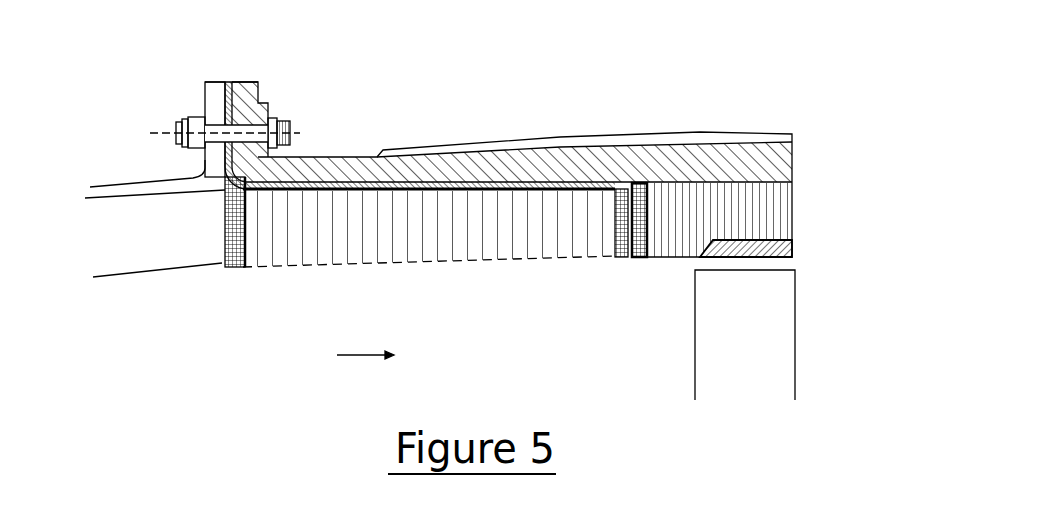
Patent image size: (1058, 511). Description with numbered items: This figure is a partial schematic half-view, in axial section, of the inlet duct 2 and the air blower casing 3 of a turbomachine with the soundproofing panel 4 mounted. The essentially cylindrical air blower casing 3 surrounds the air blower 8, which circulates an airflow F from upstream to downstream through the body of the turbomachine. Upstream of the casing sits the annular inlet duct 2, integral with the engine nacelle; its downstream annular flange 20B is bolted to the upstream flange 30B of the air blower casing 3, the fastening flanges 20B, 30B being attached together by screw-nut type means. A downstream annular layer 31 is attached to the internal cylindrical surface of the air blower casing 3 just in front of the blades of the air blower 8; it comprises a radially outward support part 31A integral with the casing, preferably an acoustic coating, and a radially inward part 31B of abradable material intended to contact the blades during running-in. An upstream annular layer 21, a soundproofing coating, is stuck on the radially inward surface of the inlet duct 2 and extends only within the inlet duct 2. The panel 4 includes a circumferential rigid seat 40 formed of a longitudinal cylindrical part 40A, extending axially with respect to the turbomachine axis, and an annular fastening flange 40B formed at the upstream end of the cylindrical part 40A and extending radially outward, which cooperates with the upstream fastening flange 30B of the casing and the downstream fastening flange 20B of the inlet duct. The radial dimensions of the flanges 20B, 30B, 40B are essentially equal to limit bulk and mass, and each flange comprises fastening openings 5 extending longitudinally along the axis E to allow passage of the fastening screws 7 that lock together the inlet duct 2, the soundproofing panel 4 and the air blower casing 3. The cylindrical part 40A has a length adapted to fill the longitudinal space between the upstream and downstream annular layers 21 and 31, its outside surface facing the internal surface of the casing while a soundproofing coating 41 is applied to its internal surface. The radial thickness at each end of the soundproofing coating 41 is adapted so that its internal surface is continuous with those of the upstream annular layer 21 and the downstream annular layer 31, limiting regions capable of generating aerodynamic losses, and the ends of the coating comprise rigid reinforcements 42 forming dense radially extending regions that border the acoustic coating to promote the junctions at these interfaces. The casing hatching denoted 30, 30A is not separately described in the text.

The inlet duct 2 is at (103, 183).
The upstream annular layer 21 is at (141, 255).
The downstream annular flange of the inlet duct 20B is at (215, 98).
The air blower casing 3 is at (697, 162).
The structural panel 30 is at (512, 156).
The horizontal portion of structural panel 30A is at (477, 168).
The upstream flange of the air blower casing 30B is at (247, 100).
The downstream annular layer 31 is at (757, 223).
The radially outwardly support part 31A is at (780, 198).
The radially inwardly abradable part 31B is at (790, 245).
The soundproofing panel 4 is at (413, 250).
The circumferential rigid seat 40 is at (486, 107).
The longitudinal cylindrical part 40A is at (560, 186).
The annular fastening flange 40B is at (228, 82).
The soundproofing coating 41 is at (450, 235).
The rigid reinforcements 42 is at (221, 264).
The fastening openings 5 is at (222, 120).
The fastening screws 7 is at (212, 168).
The air blower 8 is at (770, 330).
The axis E is at (158, 132).
The airflow F is at (365, 344).